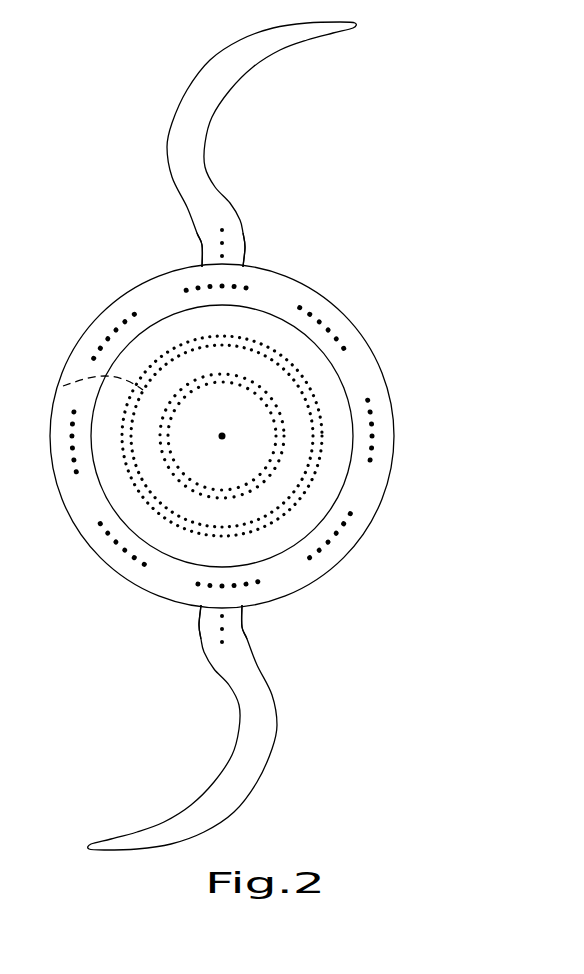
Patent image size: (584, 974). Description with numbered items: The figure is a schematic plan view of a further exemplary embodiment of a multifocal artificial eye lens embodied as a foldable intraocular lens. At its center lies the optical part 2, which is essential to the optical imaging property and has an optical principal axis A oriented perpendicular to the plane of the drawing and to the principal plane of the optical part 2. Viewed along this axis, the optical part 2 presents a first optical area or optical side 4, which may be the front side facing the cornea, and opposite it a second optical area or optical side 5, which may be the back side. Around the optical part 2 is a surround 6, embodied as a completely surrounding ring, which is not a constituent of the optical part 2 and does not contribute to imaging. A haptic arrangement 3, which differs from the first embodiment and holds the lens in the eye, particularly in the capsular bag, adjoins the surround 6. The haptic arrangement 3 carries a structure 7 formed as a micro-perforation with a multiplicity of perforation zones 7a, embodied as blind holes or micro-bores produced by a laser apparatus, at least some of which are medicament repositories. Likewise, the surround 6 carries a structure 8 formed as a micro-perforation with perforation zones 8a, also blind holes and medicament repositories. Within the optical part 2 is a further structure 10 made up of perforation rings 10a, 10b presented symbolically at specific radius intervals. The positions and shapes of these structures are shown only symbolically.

The optical part 2 is at (100, 488).
The haptic arrangement 3 is at (163, 103).
The first optical area or optical side 4 is at (252, 431).
The second optical area or optical side 5 is at (62, 386).
The surround 6 is at (72, 487).
The structure of the haptic arrangement 7 is at (205, 241).
The perforation zones 7a is at (242, 237).
The structure of the surround 8 is at (340, 332).
The perforation zones 8a is at (343, 350).
The further structure 10 is at (182, 538).
The perforation ring 10a is at (278, 467).
The perforation ring 10b is at (249, 387).
The optical principal axis A is at (224, 435).